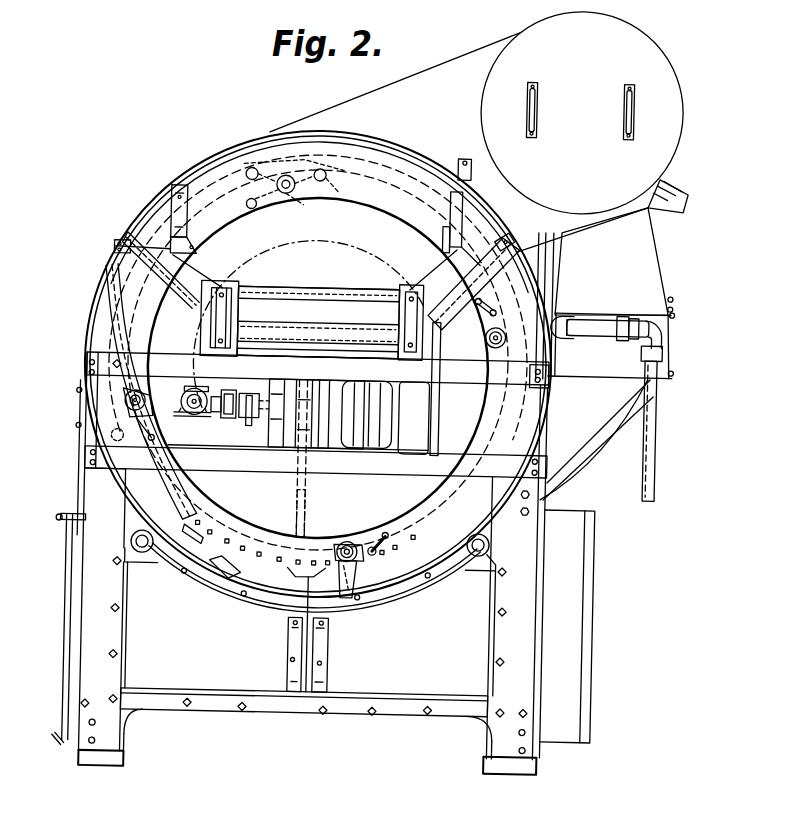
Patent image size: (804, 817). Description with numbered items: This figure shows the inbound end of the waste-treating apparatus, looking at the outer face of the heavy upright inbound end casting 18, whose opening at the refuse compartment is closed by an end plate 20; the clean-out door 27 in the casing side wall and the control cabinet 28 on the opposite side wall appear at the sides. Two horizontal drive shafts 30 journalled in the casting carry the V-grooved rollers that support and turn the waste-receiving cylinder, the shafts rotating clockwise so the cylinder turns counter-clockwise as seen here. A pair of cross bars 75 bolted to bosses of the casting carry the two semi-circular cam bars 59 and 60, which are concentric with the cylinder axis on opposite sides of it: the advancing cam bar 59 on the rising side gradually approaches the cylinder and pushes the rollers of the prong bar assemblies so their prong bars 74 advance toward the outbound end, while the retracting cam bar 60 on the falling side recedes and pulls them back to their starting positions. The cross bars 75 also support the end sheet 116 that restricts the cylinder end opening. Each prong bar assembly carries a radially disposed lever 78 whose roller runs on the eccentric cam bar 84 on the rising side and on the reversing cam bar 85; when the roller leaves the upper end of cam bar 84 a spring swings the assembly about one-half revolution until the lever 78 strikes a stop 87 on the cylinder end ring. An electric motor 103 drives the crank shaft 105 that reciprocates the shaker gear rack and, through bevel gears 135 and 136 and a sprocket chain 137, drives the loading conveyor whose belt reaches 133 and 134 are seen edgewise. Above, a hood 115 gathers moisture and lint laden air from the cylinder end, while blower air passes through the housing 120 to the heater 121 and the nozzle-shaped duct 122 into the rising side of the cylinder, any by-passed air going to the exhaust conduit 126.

The inbound end casting 18 is at (125, 731).
The end plates 20 is at (364, 679).
The clean-out door 27 is at (77, 583).
The control cabinet 28 is at (585, 601).
The drive shafts 30 is at (147, 557).
The advancing cam bar 59 is at (437, 514).
The retracting cam bar 60 is at (168, 495).
The prong bars 74 is at (345, 530).
The cross bars 75 is at (168, 357).
The lever 78 is at (347, 576).
The cam bar 84 is at (233, 575).
The reversing cam bar 85 is at (196, 546).
The stops 87 is at (480, 322).
The electric motor 103 is at (404, 420).
The crank shaft 105 is at (248, 415).
The hoods 115 is at (668, 125).
The end sheets 116 is at (325, 487).
The housing 120 is at (650, 276).
The heater 121 is at (667, 350).
The duct 122 is at (602, 446).
The exhaust conduit 126 is at (680, 205).
The upper belt reach 133 is at (312, 308).
The lower belt reach 134 is at (342, 345).
The bevel gear 135 is at (153, 416).
The bevel gear 136 is at (204, 411).
The sprocket chain 137 is at (238, 322).